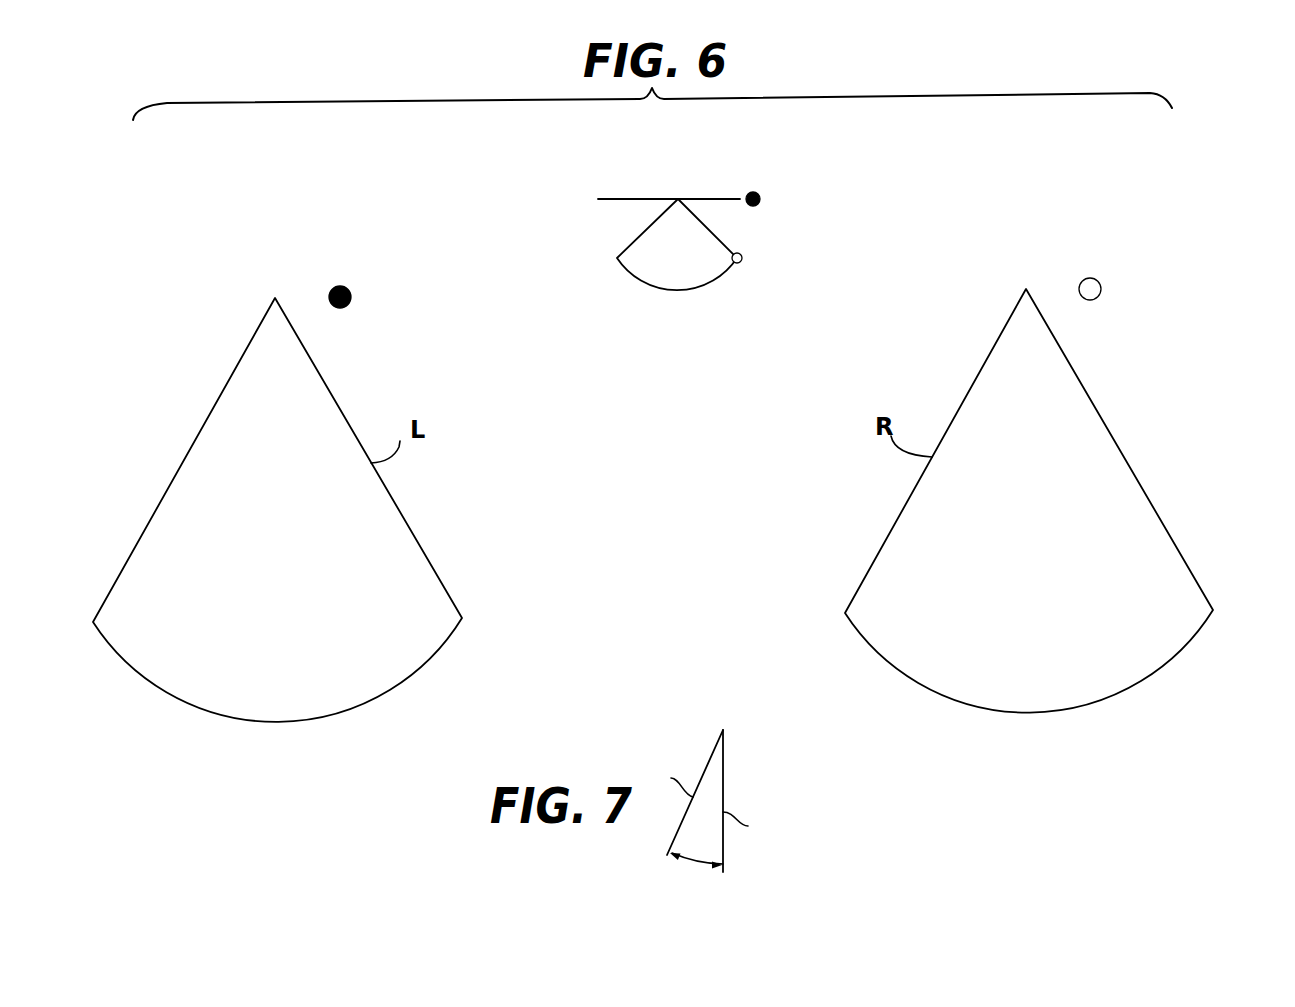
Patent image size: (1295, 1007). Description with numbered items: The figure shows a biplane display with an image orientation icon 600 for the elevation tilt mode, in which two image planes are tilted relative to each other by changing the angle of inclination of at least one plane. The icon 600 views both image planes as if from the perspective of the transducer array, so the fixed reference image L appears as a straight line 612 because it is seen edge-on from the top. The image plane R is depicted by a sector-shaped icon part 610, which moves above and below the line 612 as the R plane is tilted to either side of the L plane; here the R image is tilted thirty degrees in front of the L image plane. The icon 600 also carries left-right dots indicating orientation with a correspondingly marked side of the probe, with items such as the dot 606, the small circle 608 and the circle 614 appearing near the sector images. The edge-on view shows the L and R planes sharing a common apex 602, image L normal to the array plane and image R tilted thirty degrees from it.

In FIG. 6, the image orientation icon 600 is at (764, 167).
In FIG. 7, the common apex 602 is at (724, 731).
In FIG. 6, the right loudspeaker position 606 is at (760, 200).
In FIG. 6, the listener position 608 is at (742, 261).
In FIG. 6, the sector-shaped icon part 610 is at (643, 233).
In FIG. 6, the straight line 612 is at (638, 199).
In FIG. 6, the right loudspeaker 614 is at (1101, 288).